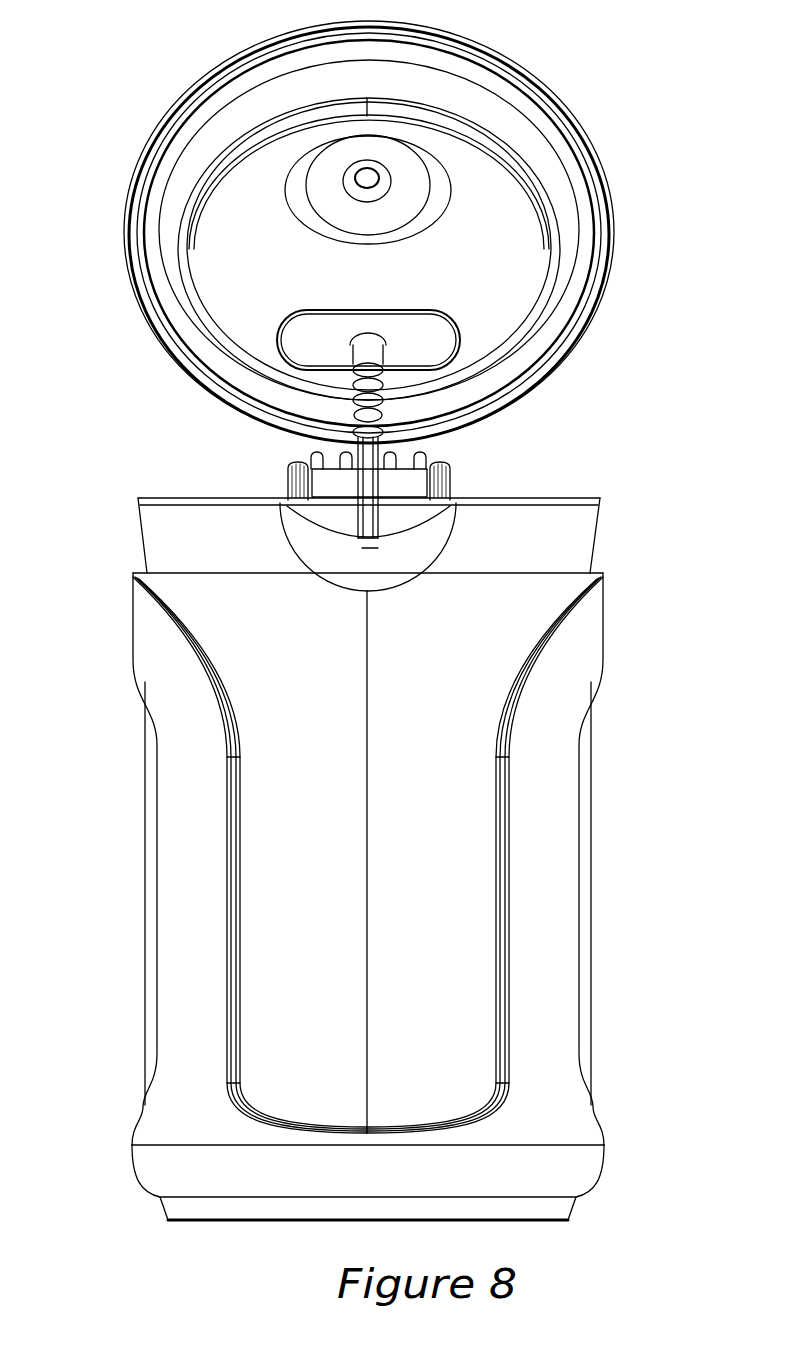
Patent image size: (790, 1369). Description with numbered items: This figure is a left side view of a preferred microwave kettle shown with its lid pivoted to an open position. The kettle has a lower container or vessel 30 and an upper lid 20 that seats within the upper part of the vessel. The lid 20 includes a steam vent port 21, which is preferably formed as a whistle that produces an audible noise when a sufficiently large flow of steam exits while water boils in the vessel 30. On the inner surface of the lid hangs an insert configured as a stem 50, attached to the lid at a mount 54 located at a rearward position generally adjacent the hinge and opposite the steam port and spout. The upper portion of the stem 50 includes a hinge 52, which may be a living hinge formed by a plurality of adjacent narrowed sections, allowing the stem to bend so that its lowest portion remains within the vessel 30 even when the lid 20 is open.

The lid 20 is at (592, 147).
The steam vent port 21 is at (350, 183).
The vessel 30 is at (537, 948).
The stem 50 is at (467, 473).
The hinge 52 is at (497, 363).
The mount 54 is at (333, 345).